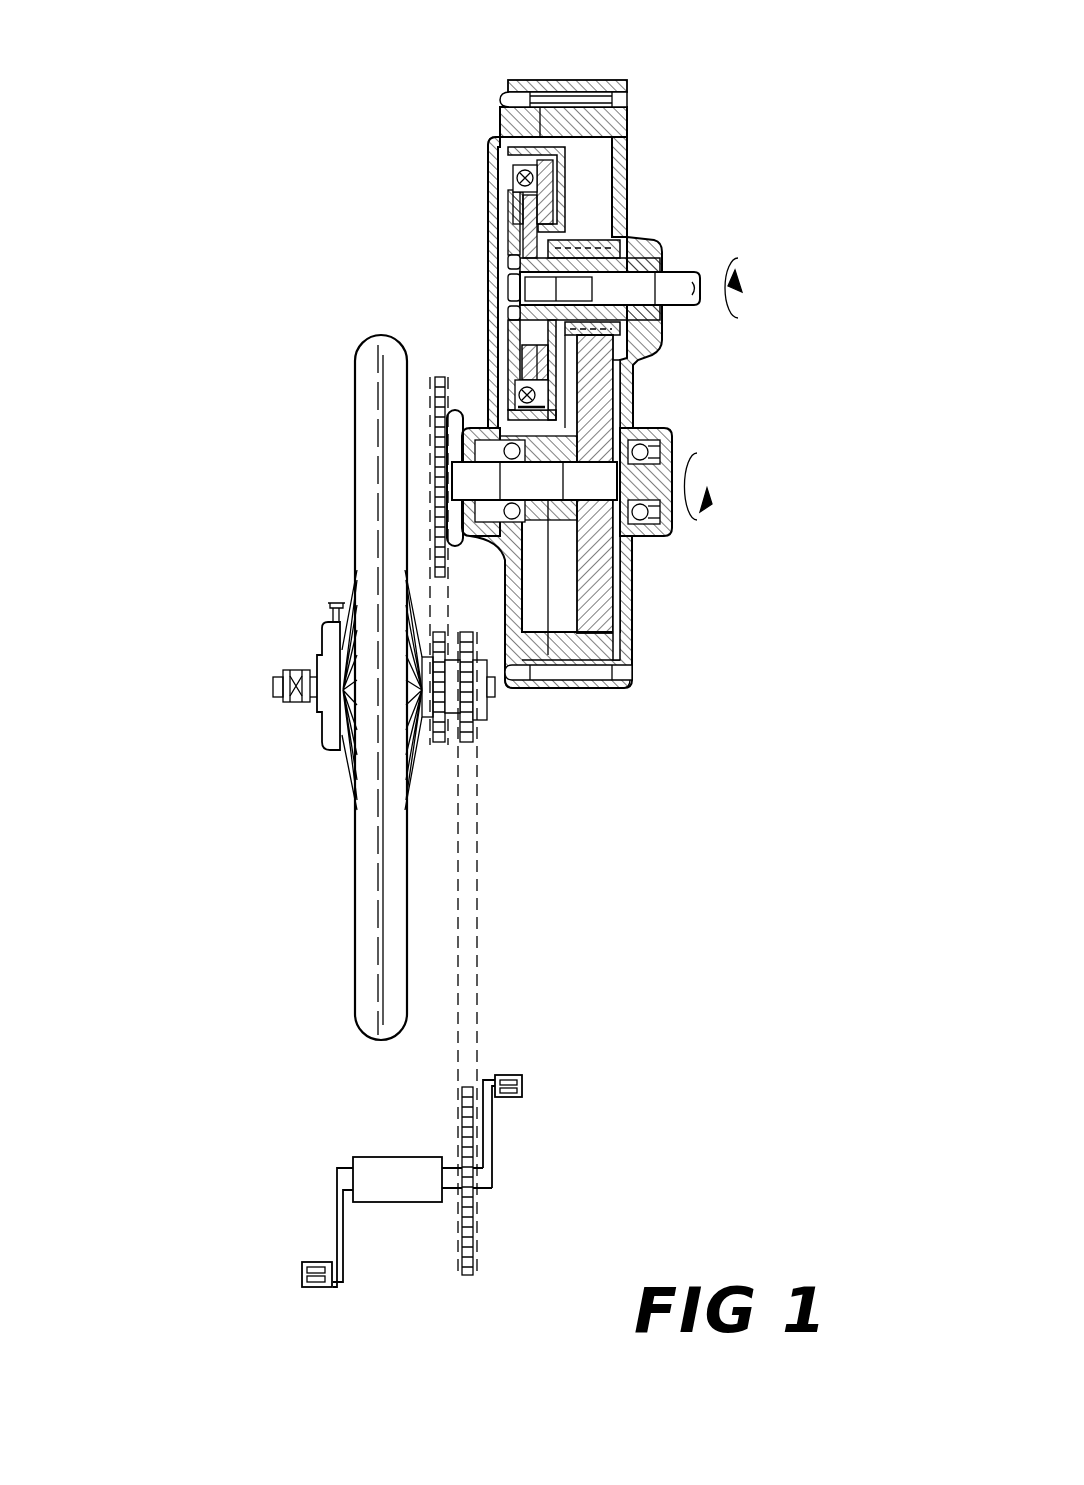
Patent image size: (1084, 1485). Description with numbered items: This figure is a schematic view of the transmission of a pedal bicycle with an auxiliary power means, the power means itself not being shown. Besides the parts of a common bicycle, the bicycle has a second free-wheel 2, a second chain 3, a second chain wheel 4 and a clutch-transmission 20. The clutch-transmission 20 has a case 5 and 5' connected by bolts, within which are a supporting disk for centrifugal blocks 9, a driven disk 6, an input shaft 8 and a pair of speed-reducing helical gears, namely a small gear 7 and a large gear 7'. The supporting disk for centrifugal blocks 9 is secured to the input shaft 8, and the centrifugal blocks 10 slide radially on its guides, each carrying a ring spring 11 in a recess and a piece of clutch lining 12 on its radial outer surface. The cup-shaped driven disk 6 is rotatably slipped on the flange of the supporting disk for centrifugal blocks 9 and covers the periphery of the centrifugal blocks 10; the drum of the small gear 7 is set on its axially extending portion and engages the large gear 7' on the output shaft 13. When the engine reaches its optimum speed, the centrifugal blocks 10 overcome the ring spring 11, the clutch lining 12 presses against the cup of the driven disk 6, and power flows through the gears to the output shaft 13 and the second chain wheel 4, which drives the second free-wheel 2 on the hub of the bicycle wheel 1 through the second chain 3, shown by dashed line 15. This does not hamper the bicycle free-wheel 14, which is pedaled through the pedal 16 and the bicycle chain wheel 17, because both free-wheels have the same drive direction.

The bicycle wheel 1 is at (372, 920).
The second free-wheel 2 is at (440, 688).
The second chain 3 is at (430, 527).
The second chain wheel 4 is at (437, 410).
The case 5 is at (533, 58).
The case 5' is at (625, 60).
The driven disk 6 is at (567, 167).
The small gear 7 is at (603, 397).
The large gear 7' is at (681, 497).
The input shaft 8 is at (675, 278).
The supporting disk for centrifugal blocks 9 is at (660, 312).
The centrifugal blocks 10 is at (553, 358).
The ring spring 11 is at (540, 395).
The clutch lining 12 is at (550, 487).
The output shaft 13 is at (622, 528).
The bicycle free-wheel 14 is at (445, 687).
The chain 15 is at (477, 907).
The pedal 16 is at (525, 1085).
The bicycle chain wheel 17 is at (470, 1160).
The clutch-transmission 20 is at (490, 85).